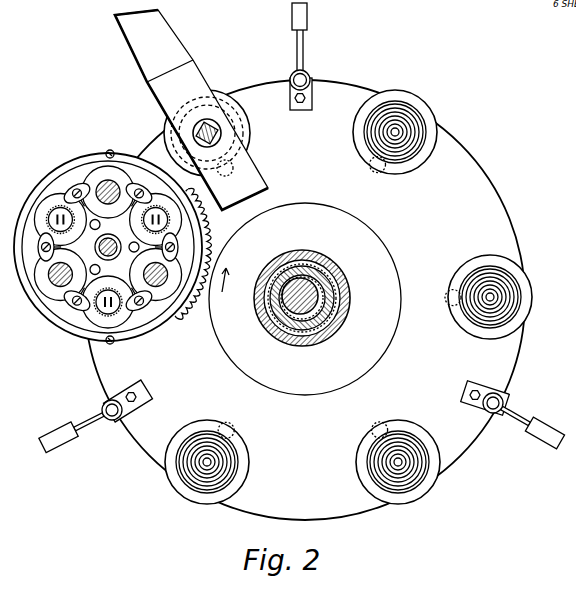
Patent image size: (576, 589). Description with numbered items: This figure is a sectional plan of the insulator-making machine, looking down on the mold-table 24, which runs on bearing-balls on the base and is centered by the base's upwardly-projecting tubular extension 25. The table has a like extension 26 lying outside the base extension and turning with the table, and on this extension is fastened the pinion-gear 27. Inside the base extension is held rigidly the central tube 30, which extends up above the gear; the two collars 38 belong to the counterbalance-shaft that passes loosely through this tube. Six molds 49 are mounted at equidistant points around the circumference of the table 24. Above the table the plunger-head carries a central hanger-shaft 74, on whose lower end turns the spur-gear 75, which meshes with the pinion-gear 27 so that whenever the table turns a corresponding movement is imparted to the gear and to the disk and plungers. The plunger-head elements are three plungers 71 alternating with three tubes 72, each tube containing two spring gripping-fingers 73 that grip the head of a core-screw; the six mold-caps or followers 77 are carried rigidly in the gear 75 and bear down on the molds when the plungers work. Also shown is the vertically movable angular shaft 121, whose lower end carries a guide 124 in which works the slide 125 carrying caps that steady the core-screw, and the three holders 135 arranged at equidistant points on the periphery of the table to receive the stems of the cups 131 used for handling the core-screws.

The mold-table 24 is at (305, 300).
The tubular extension 25 is at (322, 310).
The extension 26 is at (305, 345).
The pinion-gear 27 is at (305, 299).
The tube 30 is at (332, 290).
The collars 38 is at (335, 263).
The molds 49 is at (532, 297).
The plungers 71 is at (168, 283).
The tubes 72 is at (103, 312).
The spring gripping-fingers 73 is at (120, 310).
The hanger-shaft 74 is at (112, 243).
The spur-gear 75 is at (163, 318).
The mold-caps or followers 77 is at (185, 279).
The angular shaft 121 is at (215, 127).
The guide 124 is at (250, 178).
The slide 125 is at (170, 53).
The cups 131 is at (110, 420).
The holders 135 is at (312, 97).